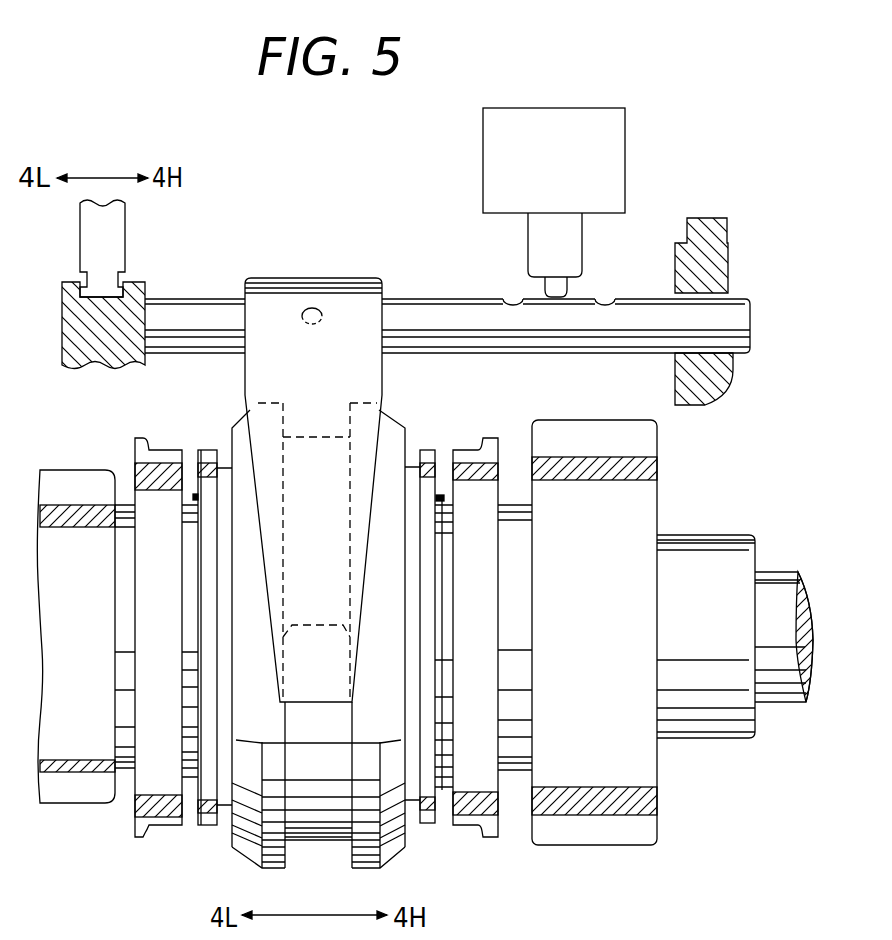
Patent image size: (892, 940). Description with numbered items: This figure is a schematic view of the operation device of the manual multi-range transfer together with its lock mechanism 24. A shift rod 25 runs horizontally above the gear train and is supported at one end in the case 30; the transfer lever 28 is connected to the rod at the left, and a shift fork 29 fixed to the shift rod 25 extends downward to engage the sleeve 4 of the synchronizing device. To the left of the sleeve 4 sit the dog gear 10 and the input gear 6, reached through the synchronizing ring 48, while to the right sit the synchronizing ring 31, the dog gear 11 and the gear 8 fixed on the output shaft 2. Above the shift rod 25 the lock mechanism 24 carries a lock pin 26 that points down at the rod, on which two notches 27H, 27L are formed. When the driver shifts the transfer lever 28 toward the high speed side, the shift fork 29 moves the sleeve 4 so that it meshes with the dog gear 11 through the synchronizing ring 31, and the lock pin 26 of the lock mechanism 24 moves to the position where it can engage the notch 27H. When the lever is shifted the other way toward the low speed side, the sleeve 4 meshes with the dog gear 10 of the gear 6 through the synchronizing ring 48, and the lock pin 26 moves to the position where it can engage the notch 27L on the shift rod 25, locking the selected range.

The output shaft 2 is at (718, 567).
The sleeve 4 is at (388, 430).
The input gear 6 is at (82, 485).
The gear 8 is at (608, 430).
The dog gear 10 is at (163, 457).
The dog gear 11 is at (490, 452).
The lock mechanism 24 is at (608, 155).
The shift rod 25 is at (422, 312).
The lock pin 26 is at (560, 299).
The notch 27H is at (510, 303).
The notch 27L is at (605, 303).
The transfer lever 28 is at (110, 222).
The shift fork 29 is at (347, 330).
The case 30 is at (705, 237).
The synchronizing ring 31 is at (428, 452).
The synchronizing ring 48 is at (210, 452).